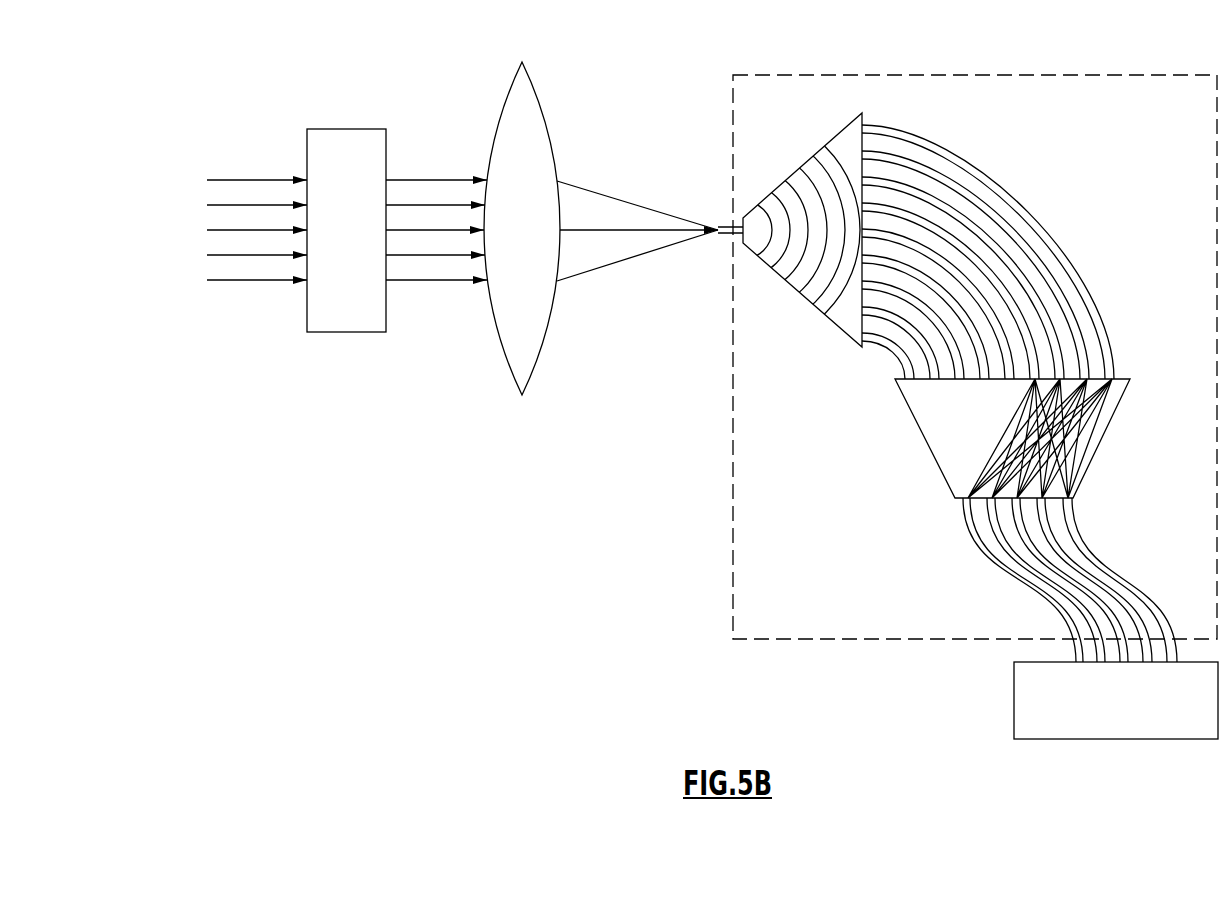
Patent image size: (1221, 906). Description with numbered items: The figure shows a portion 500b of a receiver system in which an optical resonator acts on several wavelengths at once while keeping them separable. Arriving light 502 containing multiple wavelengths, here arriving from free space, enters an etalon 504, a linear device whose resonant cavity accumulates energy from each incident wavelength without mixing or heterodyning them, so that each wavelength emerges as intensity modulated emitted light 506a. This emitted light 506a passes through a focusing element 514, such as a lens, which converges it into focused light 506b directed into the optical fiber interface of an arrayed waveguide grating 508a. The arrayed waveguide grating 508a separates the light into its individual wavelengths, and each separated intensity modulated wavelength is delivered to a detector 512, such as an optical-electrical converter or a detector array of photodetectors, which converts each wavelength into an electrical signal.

The portion of a receiver system 500b is at (389, 505).
The arriving light 502 is at (250, 166).
The etalon 504 is at (351, 129).
The intensity modulated emitted light 506a is at (416, 312).
The focused light 506b is at (620, 278).
The arrayed waveguide grating 508a is at (1115, 75).
The detector 512 is at (1014, 718).
The focusing element 514 is at (527, 80).